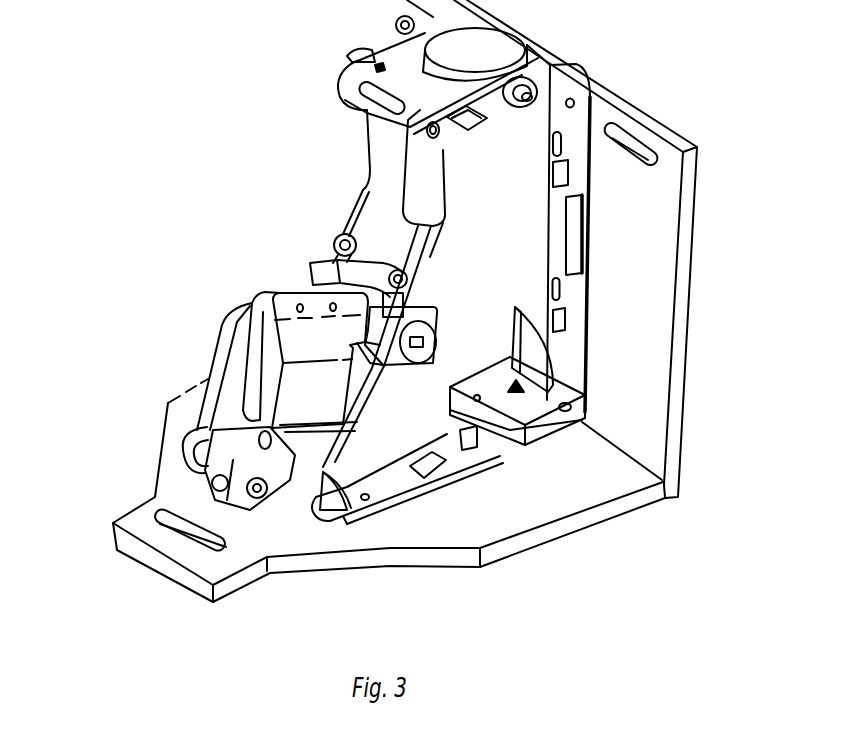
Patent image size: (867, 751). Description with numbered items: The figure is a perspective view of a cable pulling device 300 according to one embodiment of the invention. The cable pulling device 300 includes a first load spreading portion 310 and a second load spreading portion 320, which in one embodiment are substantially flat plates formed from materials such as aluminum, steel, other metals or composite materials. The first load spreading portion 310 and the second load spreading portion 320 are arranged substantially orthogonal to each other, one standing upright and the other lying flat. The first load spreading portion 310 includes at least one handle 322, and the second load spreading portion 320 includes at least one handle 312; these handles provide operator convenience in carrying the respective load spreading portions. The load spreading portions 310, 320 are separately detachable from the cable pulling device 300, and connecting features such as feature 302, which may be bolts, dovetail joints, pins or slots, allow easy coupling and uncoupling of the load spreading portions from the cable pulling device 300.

The cable pulling device 300 is at (246, 173).
The connecting feature 302 is at (560, 153).
The first load spreading portion 310 is at (650, 265).
The handle 312 is at (648, 147).
The second load spreading portion 320 is at (507, 527).
The handle 322 is at (157, 521).